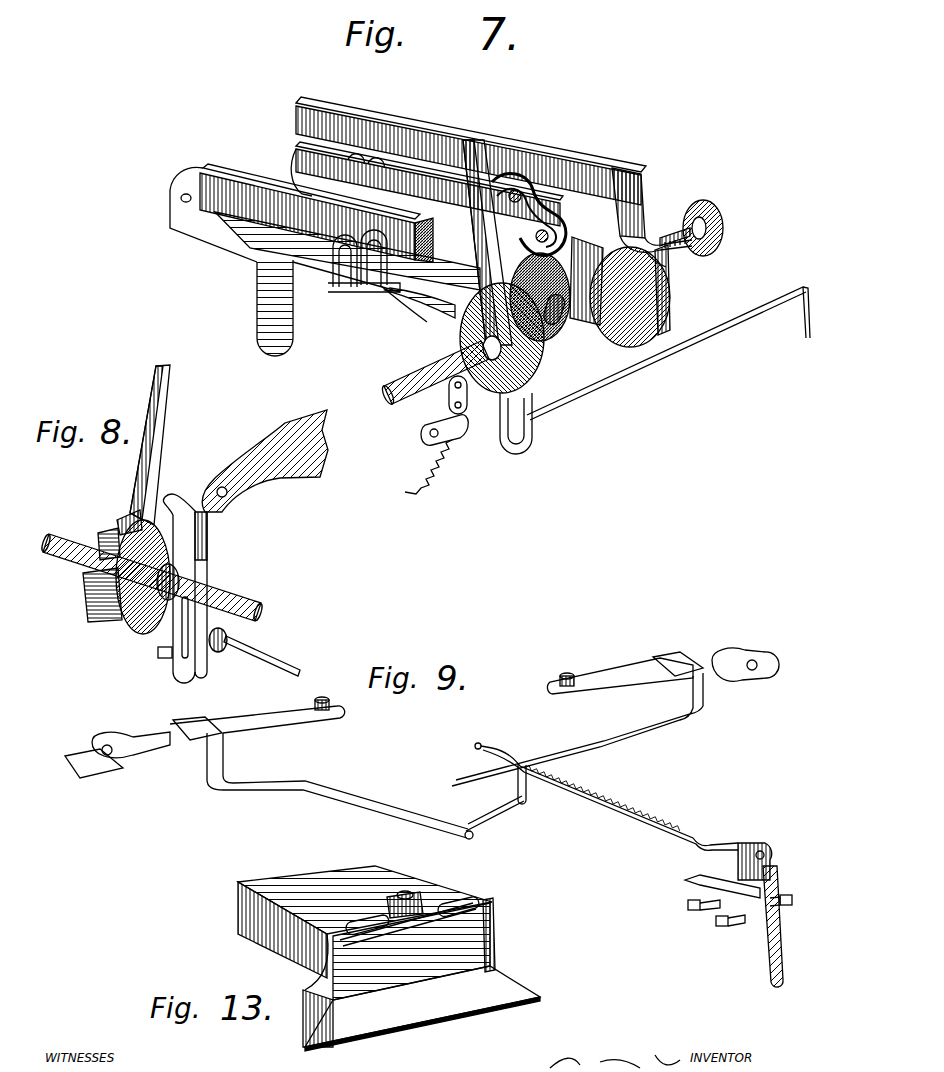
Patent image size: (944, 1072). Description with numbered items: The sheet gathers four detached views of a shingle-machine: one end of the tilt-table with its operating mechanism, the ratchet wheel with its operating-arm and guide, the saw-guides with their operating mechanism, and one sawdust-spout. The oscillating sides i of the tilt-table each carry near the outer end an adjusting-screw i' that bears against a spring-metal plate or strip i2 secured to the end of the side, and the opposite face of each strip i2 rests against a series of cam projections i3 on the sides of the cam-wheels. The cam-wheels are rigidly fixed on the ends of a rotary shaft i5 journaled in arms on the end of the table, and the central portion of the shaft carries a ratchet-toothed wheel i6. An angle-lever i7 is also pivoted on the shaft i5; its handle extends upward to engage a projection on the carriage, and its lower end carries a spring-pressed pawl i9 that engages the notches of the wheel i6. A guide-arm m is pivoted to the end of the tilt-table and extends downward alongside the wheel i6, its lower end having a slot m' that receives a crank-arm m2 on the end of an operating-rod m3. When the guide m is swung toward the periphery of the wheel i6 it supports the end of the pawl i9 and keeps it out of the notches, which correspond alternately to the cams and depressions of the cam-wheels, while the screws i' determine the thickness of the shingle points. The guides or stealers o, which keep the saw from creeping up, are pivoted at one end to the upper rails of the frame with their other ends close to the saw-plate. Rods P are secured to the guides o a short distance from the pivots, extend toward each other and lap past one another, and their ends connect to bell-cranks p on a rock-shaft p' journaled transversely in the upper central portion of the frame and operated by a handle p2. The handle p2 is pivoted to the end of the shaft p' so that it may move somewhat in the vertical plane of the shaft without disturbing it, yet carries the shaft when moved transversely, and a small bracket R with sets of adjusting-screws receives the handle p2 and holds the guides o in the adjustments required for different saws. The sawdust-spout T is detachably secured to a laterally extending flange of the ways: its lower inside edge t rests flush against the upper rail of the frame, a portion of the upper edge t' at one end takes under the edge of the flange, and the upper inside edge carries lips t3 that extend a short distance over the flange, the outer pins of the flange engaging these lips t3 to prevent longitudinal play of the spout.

In FIG. 7, the oscillating sides i is at (494, 174).
In FIG. 7, the adjusting-screw i' is at (691, 216).
In FIG. 7, the spring-metal plate or strip i2 is at (664, 266).
In FIG. 7, the cam projections i3 is at (666, 320).
In FIG. 7, the rotary shaft i5 is at (615, 330).
In FIG. 7, the ratchet-toothed wheel i6 is at (540, 294).
In FIG. 8, the ratchet-toothed wheel i6 is at (128, 628).
In FIG. 7, the angle-lever i7 is at (482, 286).
In FIG. 8, the angle-lever i7 is at (160, 437).
In FIG. 7, the spring-pressed pawl i9 is at (457, 352).
In FIG. 7, the guide-arm m is at (527, 429).
In FIG. 8, the guide-arm m is at (245, 546).
In FIG. 7, the slot m' is at (450, 454).
In FIG. 8, the slot m' is at (200, 627).
In FIG. 7, the crank-arm m2 is at (482, 396).
In FIG. 8, the crank-arm m2 is at (160, 655).
In FIG. 7, the operating-rod m3 is at (668, 353).
In FIG. 8, the operating-rod m3 is at (254, 652).
In FIG. 9, the guides or stealers o is at (422, 743).
In FIG. 9, the rods P is at (611, 720).
In FIG. 9, the bell-cranks p is at (532, 795).
In FIG. 9, the rock-shaft p' is at (606, 796).
In FIG. 9, the handle p2 is at (780, 940).
In FIG. 9, the bracket R is at (738, 884).
In FIG. 13, the sawdust-spout T is at (365, 928).
In FIG. 13, the lower inside edge t is at (421, 976).
In FIG. 13, the upper edge t' is at (499, 927).
In FIG. 13, the lips t3 is at (460, 895).